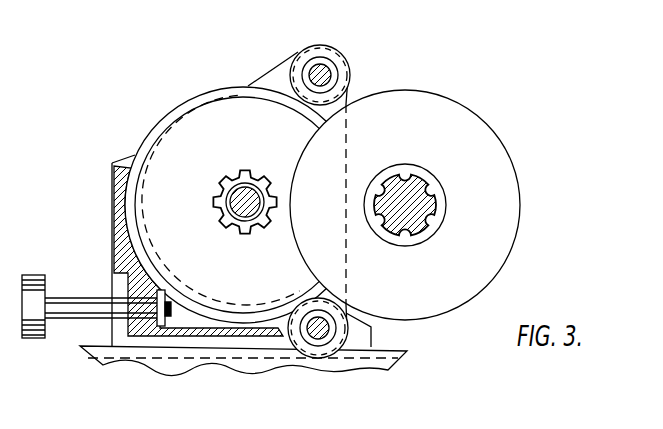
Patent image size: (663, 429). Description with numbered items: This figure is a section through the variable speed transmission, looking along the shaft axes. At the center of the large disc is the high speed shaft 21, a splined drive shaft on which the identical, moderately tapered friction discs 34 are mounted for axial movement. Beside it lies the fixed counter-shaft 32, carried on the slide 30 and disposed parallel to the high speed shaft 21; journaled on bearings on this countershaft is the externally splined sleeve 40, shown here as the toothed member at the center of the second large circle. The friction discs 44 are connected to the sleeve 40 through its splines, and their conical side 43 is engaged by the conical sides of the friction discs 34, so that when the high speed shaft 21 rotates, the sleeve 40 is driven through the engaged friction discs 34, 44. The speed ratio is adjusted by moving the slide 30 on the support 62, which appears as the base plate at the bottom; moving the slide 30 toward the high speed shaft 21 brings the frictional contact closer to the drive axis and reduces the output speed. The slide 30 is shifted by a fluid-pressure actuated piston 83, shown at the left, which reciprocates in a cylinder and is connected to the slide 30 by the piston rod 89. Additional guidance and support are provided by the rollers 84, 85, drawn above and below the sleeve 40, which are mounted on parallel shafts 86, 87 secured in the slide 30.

The high speed shaft 21 is at (418, 194).
The slide 30 is at (112, 199).
The fixed counter-shaft 32 is at (246, 212).
The friction disc 34 is at (500, 172).
The sleeve 40 is at (243, 178).
The conical side 43 is at (209, 97).
The friction disc 44 is at (168, 155).
The support 62 is at (383, 358).
The fluid-pressure actuated piston 83 is at (31, 290).
The roller 84 is at (320, 45).
The roller 85 is at (336, 340).
The shaft 86 is at (329, 72).
The shaft 87 is at (315, 338).
The piston rod 89 is at (88, 298).